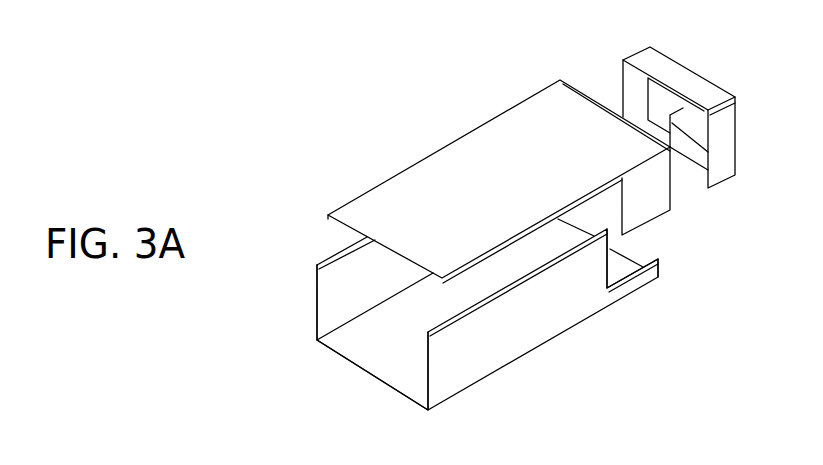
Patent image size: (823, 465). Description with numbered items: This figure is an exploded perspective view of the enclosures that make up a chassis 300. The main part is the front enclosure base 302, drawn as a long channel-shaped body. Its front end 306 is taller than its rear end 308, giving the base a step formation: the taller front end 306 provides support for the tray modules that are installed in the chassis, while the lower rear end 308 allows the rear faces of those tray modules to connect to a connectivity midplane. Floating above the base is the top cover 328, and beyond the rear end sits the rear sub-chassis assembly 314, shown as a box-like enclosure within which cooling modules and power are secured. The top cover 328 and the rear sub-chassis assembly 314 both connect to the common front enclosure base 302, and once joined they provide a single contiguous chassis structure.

The chassis 300 is at (103, 72).
The front enclosure base 302 is at (490, 373).
The front end 306 is at (313, 409).
The rear end 308 is at (693, 242).
The rear sub-chassis assembly 314 is at (657, 63).
The top cover 328 is at (477, 157).